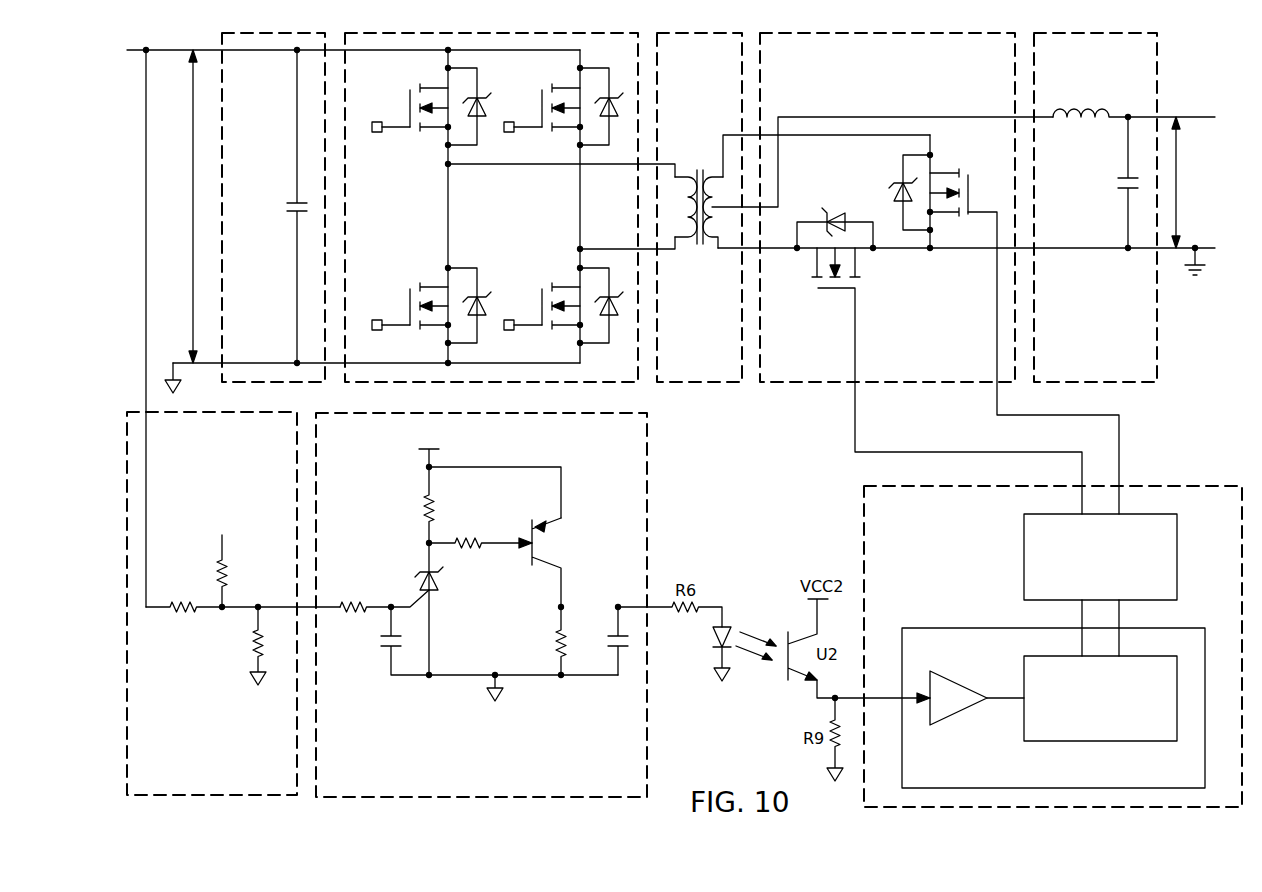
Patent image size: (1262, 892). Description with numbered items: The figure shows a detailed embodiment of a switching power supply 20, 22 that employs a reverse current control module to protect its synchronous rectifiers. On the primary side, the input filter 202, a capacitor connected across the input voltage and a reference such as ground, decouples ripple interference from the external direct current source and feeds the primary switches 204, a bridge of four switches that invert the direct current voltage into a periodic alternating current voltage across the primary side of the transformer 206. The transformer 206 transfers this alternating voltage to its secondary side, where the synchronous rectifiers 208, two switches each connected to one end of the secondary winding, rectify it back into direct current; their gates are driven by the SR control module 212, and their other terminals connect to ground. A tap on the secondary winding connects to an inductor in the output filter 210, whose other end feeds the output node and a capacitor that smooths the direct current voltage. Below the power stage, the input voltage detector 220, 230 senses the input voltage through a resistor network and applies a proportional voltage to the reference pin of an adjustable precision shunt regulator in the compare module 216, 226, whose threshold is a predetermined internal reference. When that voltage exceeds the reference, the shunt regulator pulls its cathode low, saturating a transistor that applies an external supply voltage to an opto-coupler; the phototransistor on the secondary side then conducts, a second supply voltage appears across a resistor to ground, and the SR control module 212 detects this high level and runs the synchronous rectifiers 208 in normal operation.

The isolated power supply 20 is at (693, 318).
The isolated power supply 22 is at (1228, 58).
The input filter 202 is at (273, 207).
The primary switches 204 is at (491, 207).
The transformer 206 is at (750, 207).
The synchronous rectifiers 208 is at (966, 273).
The output filter 210 is at (1124, 207).
The SR control module 212 is at (1163, 487).
The compare module 216 is at (481, 605).
The compare module 226 is at (481, 605).
The input voltage detector 220 is at (233, 603).
The input voltage detector 230 is at (233, 603).